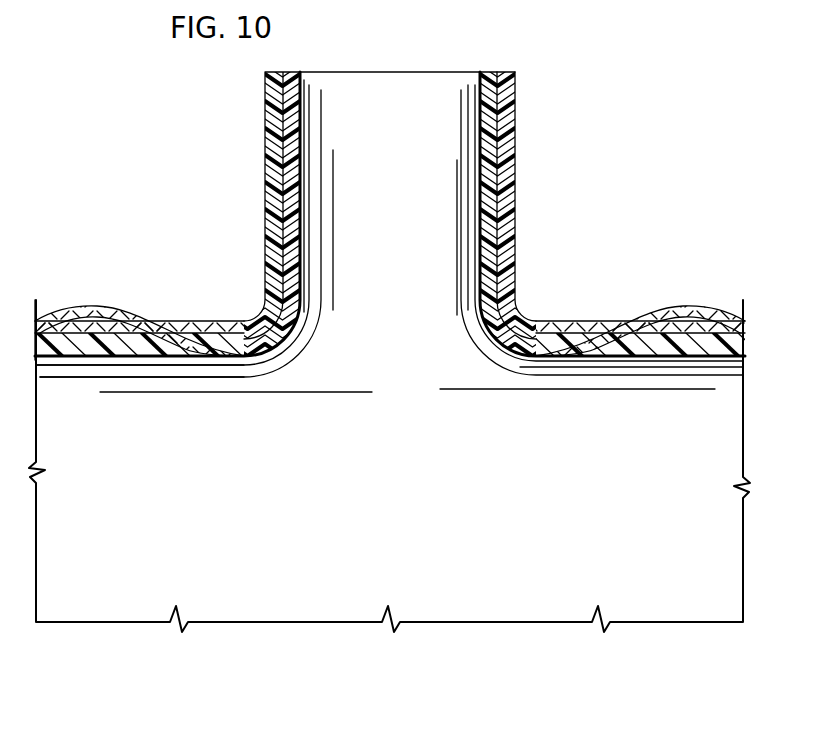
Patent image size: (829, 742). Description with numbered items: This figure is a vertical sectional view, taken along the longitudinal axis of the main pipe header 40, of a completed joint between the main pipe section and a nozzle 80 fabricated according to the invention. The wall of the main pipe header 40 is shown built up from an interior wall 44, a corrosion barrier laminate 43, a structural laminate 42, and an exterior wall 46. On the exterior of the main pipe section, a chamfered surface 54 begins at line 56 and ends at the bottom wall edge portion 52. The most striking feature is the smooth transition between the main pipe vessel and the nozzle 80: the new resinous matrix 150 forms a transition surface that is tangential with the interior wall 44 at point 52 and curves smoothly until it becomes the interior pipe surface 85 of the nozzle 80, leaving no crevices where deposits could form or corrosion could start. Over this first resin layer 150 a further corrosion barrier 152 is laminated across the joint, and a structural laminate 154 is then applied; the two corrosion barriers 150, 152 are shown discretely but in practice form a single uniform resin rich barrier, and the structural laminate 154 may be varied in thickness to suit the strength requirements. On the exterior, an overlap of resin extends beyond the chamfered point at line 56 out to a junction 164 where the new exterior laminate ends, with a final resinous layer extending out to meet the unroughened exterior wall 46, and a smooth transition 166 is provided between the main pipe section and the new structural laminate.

The main pipe header 40 is at (735, 314).
The structural laminate 42 is at (38, 321).
The corrosion barrier laminate 43 is at (82, 345).
The interior wall 44 is at (108, 358).
The exterior wall 46 is at (50, 321).
The bottom wall edge portion 52 is at (553, 355).
The chamfered surface 54 is at (594, 340).
The line 56 is at (677, 318).
The nozzle 80 is at (523, 125).
The interior pipe surface 85 is at (480, 190).
The resinous matrix 150 is at (480, 200).
The corrosion barrier 152 is at (487, 222).
The structural laminate 154 is at (505, 263).
The junction 164 is at (54, 321).
The smooth transition 166 is at (112, 307).